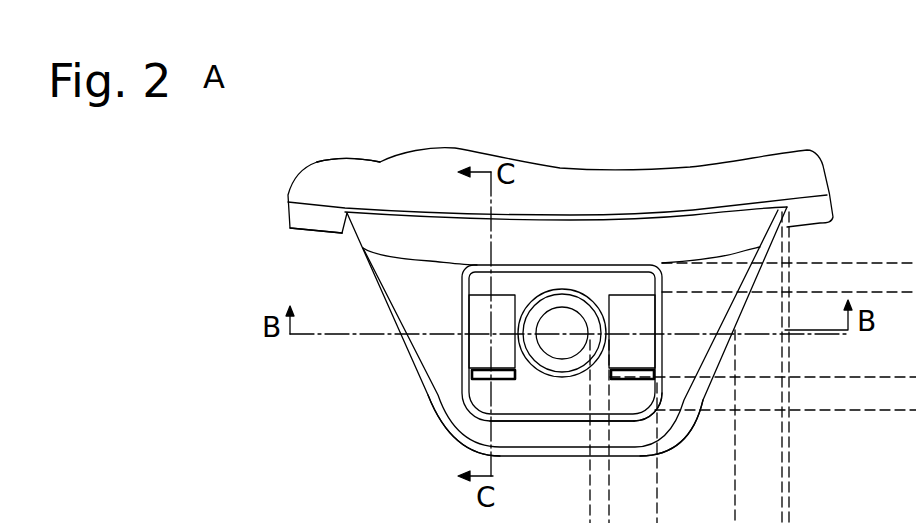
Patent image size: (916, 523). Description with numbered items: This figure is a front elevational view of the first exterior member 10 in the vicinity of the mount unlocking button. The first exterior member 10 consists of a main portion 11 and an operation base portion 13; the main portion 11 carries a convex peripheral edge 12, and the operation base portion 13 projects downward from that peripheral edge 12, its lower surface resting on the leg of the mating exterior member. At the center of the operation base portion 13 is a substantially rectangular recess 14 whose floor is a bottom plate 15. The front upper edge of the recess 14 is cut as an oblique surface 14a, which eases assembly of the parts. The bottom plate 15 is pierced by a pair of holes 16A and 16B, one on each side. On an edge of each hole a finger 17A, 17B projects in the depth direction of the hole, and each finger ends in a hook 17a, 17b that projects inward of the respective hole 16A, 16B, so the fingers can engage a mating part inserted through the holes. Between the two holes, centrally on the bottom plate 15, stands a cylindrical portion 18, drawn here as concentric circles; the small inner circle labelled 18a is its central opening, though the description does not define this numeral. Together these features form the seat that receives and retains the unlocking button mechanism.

The first exterior member 10 is at (657, 168).
The main portion 11 is at (327, 168).
The peripheral edge 12 is at (308, 218).
The operation base portion 13 is at (415, 383).
The recess 14 is at (566, 400).
The oblique surface 14a is at (633, 383).
The bottom plate 15 is at (531, 400).
The hole 16A is at (480, 320).
The hole 16B is at (642, 320).
The hook 17a is at (482, 372).
The hook 17b is at (635, 366).
The finger 17A is at (483, 388).
The finger 17B is at (637, 405).
The cylindrical portion 18 is at (546, 286).
The hole of boss 18a is at (563, 316).